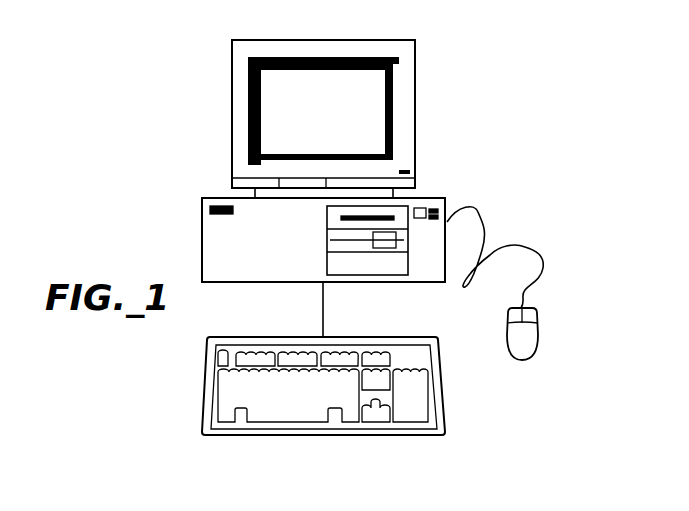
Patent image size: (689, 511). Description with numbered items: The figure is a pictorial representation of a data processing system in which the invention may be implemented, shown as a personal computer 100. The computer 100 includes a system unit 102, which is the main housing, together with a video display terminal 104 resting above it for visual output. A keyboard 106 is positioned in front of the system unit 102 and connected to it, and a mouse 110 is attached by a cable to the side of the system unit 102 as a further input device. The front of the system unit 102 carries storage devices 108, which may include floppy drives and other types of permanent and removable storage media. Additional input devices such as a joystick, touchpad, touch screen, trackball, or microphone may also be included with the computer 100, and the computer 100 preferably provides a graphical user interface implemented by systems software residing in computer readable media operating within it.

The computer 100 is at (521, 156).
The system unit 102 is at (323, 267).
The video display terminal 104 is at (415, 108).
The keyboard 106 is at (445, 410).
The storage devices 108 is at (327, 246).
The mouse 110 is at (540, 330).